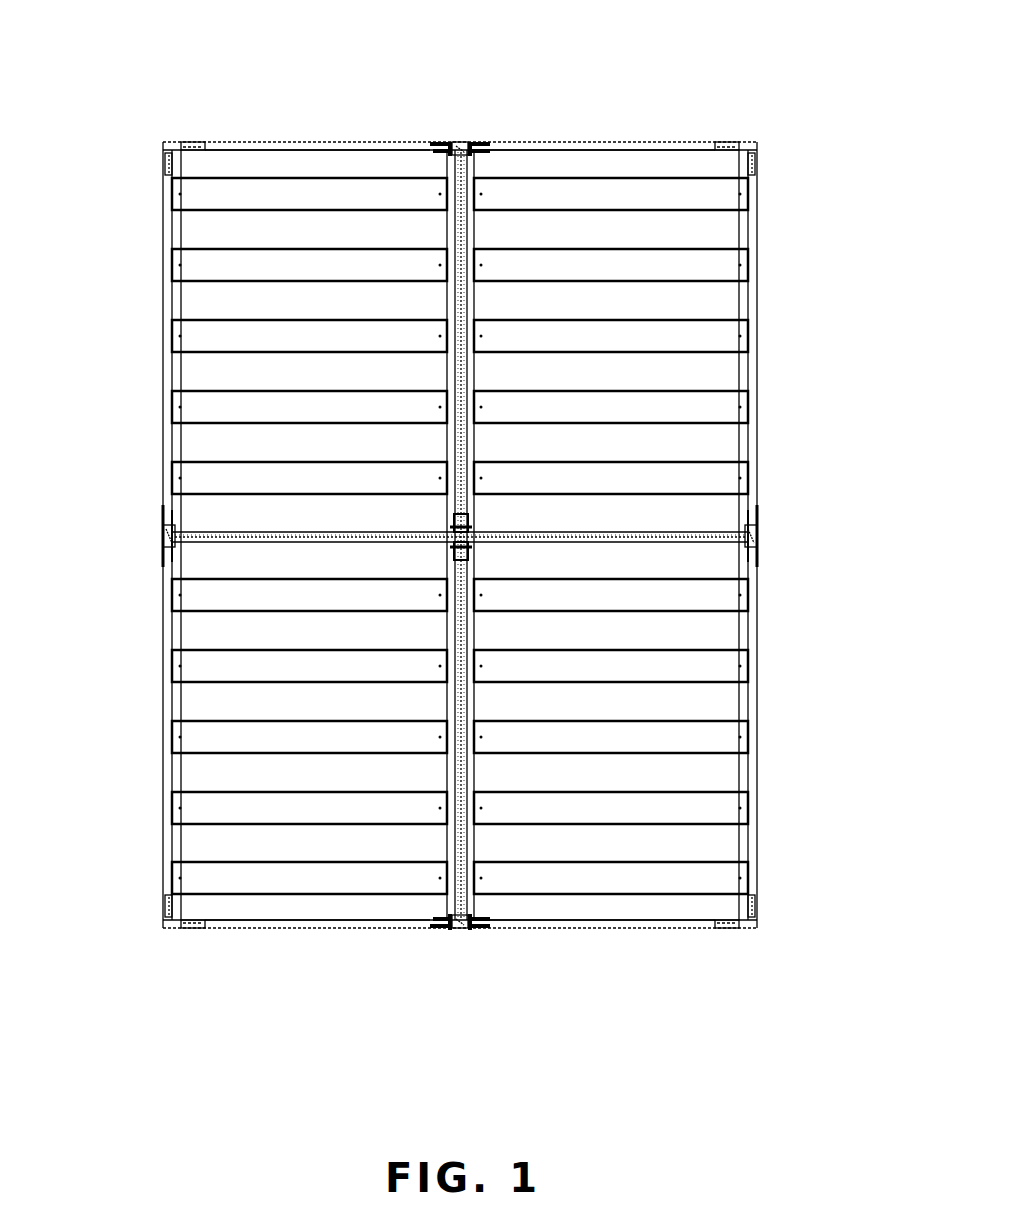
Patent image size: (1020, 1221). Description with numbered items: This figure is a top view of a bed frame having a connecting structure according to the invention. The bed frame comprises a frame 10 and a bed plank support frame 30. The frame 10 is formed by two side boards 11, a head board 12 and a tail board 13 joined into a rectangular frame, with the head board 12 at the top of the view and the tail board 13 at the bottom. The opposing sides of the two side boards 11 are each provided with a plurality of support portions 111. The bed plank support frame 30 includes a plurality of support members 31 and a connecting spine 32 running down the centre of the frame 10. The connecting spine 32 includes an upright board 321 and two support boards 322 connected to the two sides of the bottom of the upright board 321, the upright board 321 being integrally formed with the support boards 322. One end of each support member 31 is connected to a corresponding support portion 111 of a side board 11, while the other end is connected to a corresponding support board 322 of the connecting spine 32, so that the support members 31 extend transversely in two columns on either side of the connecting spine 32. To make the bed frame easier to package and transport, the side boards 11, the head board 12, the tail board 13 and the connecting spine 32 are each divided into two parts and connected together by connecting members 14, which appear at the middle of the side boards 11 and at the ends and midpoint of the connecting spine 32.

The frame 10 is at (689, 103).
The side board 11 is at (165, 433).
The support portion 111 is at (176, 365).
The head board 12 is at (247, 148).
The tail board 13 is at (315, 923).
The connecting member 14 is at (452, 142).
The bed plank support frame 30 is at (404, 634).
The support member 31 is at (195, 265).
The connecting spine 32 is at (460, 609).
The upright board 321 is at (465, 905).
The support board 322 is at (444, 846).